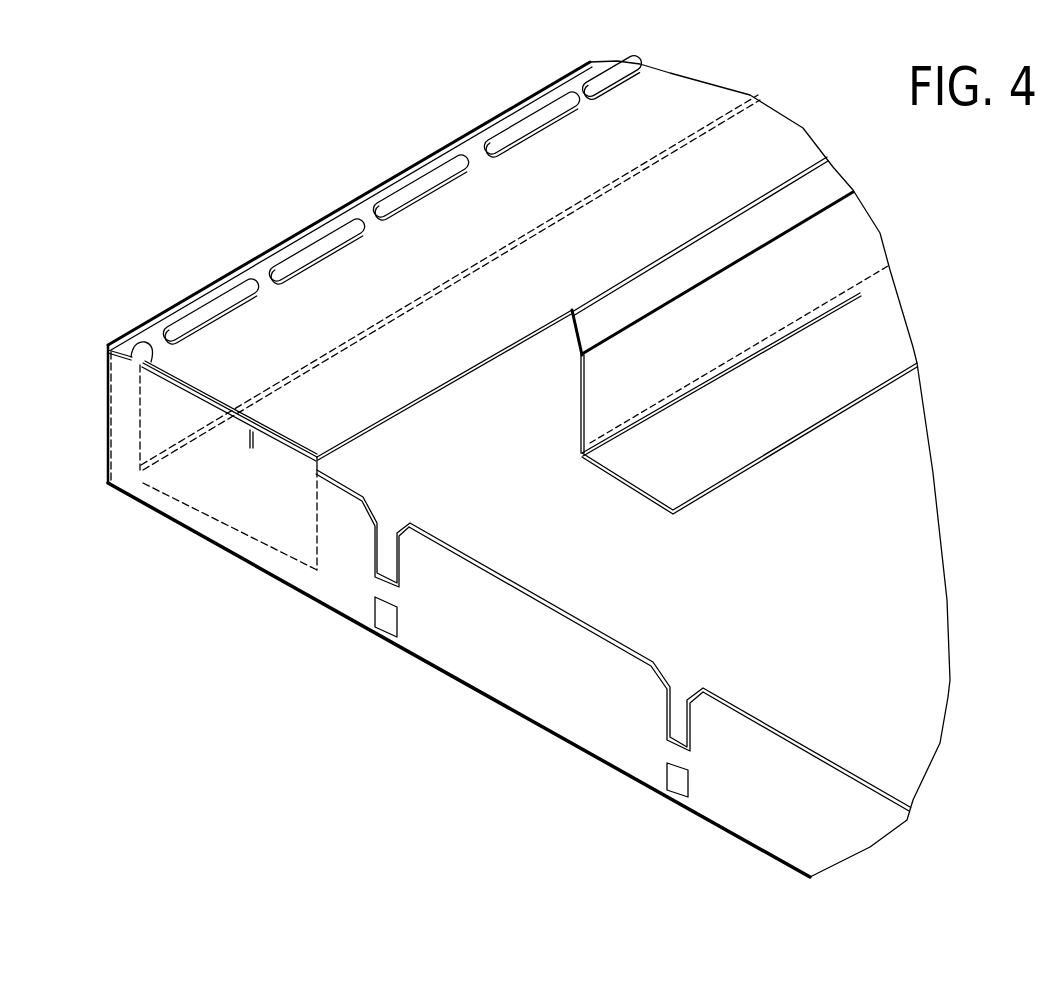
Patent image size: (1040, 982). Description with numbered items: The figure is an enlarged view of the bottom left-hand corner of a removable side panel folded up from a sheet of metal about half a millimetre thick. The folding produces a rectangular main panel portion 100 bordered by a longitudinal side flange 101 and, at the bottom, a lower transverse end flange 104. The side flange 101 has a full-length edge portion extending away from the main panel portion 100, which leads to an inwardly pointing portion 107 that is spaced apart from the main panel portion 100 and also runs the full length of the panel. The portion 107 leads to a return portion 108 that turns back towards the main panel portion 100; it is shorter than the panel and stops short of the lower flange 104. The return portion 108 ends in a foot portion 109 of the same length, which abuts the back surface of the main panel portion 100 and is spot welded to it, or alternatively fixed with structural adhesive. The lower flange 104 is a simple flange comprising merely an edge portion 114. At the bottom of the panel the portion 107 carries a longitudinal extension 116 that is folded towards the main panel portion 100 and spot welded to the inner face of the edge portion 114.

The main panel portion 100 is at (898, 510).
The longitudinal side flange 101 is at (413, 260).
The lower transverse end flange 104 is at (633, 647).
The inwardly pointing portion 107 is at (518, 203).
The return portion 108 is at (853, 247).
The foot portion 109 is at (880, 343).
The edge portion 114 is at (542, 665).
The longitudinal extension 116 is at (268, 497).